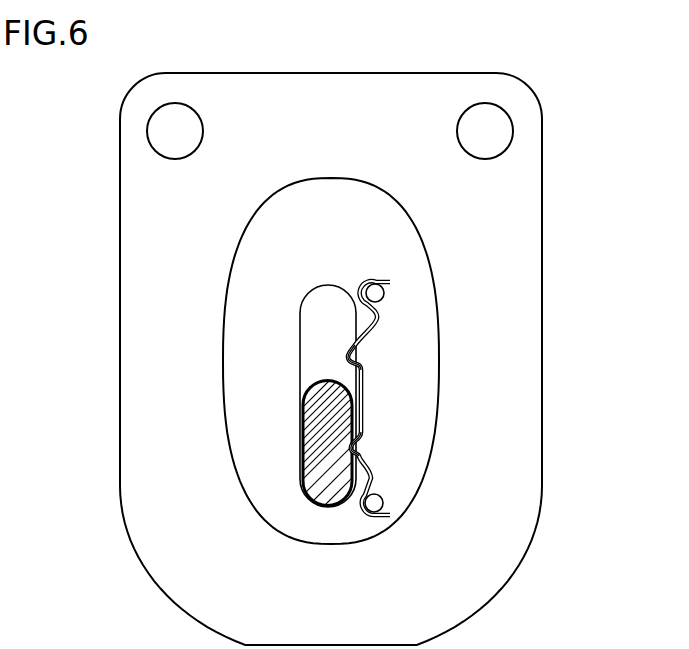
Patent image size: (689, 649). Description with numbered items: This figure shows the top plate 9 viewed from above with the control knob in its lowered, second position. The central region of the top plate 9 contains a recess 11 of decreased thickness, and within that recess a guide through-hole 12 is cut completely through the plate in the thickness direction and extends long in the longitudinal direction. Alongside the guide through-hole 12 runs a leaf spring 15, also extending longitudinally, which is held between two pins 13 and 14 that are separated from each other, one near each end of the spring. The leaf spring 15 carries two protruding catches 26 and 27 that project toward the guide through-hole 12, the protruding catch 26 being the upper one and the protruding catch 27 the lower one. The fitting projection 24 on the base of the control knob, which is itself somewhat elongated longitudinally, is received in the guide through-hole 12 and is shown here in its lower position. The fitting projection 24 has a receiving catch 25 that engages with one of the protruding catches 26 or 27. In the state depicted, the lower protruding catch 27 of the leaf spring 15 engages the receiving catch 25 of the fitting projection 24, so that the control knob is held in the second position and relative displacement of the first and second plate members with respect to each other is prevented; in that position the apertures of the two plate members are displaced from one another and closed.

The top plate 9 is at (185, 189).
The recess 11 is at (258, 297).
The guide through-hole 12 is at (300, 291).
The pin 13 is at (375, 293).
The pin 14 is at (374, 503).
The leaf spring 15 is at (363, 392).
The fitting projection 24 is at (330, 405).
The receiving catch 25 is at (347, 437).
The protruding catch 26 is at (350, 349).
The protruding catch 27 is at (352, 460).